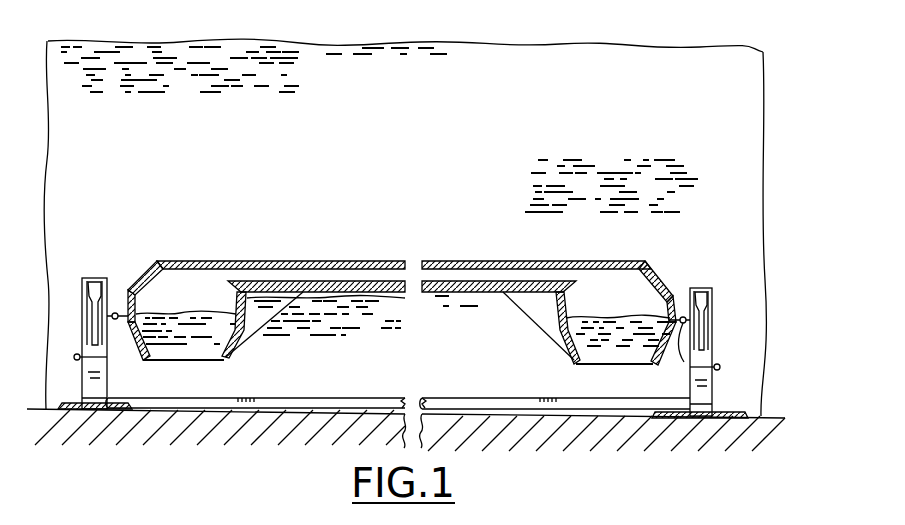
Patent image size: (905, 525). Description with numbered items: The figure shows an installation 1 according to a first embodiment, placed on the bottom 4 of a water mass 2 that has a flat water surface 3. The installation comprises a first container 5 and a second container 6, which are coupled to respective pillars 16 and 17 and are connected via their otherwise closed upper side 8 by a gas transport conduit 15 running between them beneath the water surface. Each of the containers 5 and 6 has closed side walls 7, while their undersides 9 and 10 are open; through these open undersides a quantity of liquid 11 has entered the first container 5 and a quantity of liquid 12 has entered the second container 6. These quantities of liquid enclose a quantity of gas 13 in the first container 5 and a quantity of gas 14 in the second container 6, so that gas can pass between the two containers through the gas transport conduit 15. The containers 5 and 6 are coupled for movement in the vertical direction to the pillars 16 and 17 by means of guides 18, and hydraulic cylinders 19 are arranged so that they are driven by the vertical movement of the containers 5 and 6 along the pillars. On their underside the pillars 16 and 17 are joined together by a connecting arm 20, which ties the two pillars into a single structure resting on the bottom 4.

The installation 1 is at (268, 240).
The water mass 2 is at (706, 120).
The water surface 3 is at (550, 78).
The bottom 4 is at (702, 432).
The first container 5 is at (668, 296).
The second container 6 is at (133, 288).
The closed side walls 7 is at (237, 346).
The upper side 8 is at (404, 243).
The open underside 9 is at (602, 364).
The open underside 10 is at (180, 360).
The quantity of liquid 11 is at (636, 330).
The quantity of liquid 12 is at (198, 333).
The quantity of gas 13 is at (598, 295).
The quantity of gas 14 is at (196, 297).
The gas transport conduit 15 is at (352, 261).
The pillar 16 is at (706, 395).
The pillar 17 is at (90, 370).
The guides 18 is at (115, 313).
The hydraulic cylinders 19 is at (703, 312).
The connecting arm 20 is at (355, 398).